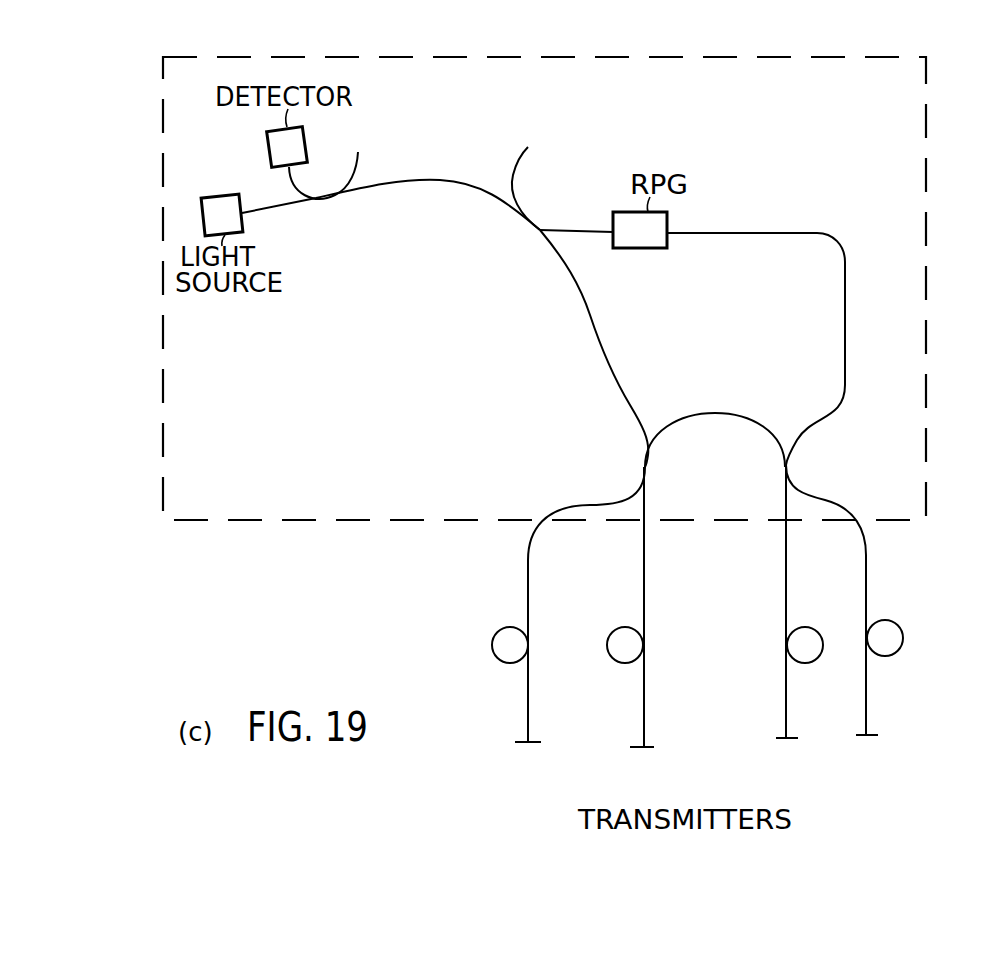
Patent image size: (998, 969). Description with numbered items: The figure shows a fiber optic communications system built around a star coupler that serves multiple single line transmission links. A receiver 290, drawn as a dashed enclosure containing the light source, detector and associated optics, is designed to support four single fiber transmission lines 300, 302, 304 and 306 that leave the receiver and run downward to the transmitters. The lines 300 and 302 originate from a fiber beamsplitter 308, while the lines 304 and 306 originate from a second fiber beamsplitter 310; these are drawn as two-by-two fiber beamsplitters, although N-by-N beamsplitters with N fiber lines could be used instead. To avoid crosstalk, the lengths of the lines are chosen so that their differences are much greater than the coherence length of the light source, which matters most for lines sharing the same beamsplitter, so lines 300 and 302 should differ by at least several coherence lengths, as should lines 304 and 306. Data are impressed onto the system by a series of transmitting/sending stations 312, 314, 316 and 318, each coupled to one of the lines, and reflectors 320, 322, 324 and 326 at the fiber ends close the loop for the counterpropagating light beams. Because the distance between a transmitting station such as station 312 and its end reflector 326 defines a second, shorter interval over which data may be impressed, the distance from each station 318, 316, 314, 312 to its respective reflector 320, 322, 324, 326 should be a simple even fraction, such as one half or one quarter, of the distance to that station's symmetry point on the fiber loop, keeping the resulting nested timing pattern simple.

The receiver 290 is at (590, 52).
The single fiber transmission line 300 is at (868, 548).
The single fiber transmission line 302 is at (786, 540).
The single fiber transmission line 304 is at (646, 578).
The single fiber transmission line 306 is at (530, 560).
The fiber beamsplitter 308 is at (790, 462).
The fiber beamsplitter 310 is at (645, 465).
The transmitting/sending station 312 is at (492, 645).
The transmitting/sending station 314 is at (626, 663).
The transmitting/sending station 316 is at (817, 658).
The transmitting/sending station 318 is at (902, 648).
The reflector 320 is at (868, 738).
The reflector 322 is at (782, 741).
The reflector 324 is at (636, 750).
The reflector 326 is at (521, 745).